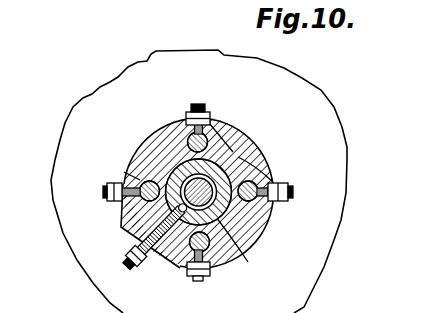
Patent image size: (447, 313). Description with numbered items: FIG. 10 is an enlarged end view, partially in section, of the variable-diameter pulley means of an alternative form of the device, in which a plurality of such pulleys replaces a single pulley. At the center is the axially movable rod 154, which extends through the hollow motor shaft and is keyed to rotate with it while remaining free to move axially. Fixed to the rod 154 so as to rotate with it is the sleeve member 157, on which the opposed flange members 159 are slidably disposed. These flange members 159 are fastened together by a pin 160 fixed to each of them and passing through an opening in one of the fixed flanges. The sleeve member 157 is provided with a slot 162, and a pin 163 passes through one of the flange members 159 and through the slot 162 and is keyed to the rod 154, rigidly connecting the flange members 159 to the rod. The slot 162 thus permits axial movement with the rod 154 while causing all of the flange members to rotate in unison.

The axially movable rod 154 is at (228, 202).
The sleeve member 157 is at (254, 144).
The opposed flange members 159 is at (91, 115).
The pin 160 is at (205, 119).
The slot 162 is at (147, 230).
The pin 163 is at (168, 238).